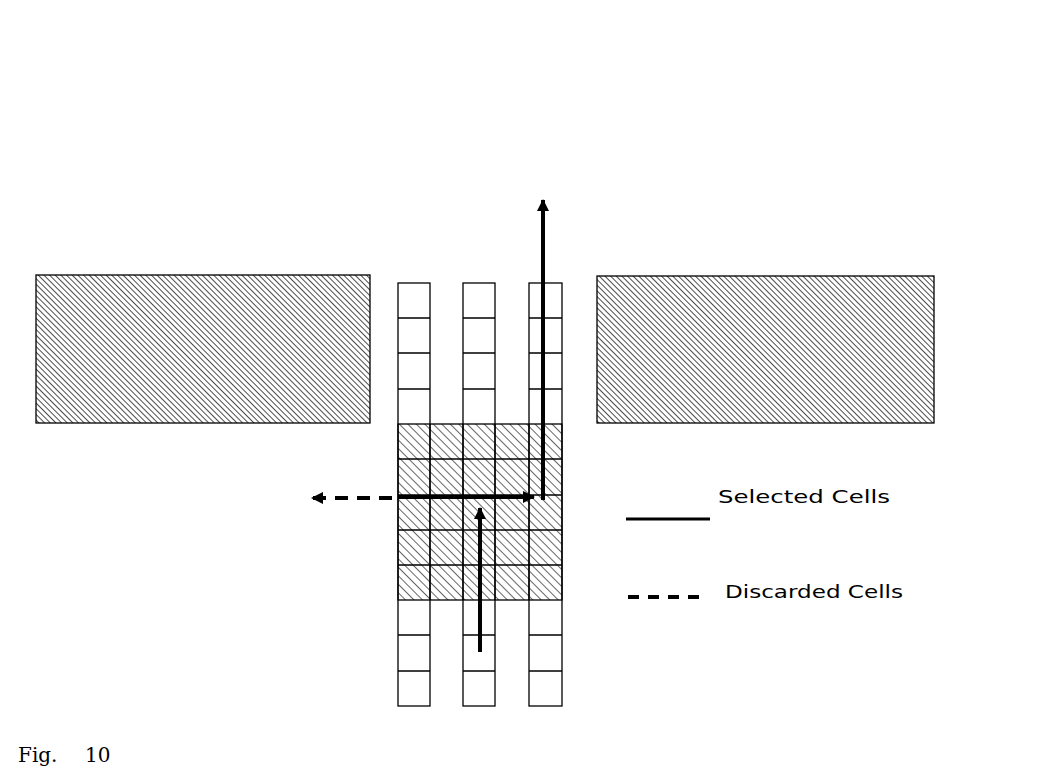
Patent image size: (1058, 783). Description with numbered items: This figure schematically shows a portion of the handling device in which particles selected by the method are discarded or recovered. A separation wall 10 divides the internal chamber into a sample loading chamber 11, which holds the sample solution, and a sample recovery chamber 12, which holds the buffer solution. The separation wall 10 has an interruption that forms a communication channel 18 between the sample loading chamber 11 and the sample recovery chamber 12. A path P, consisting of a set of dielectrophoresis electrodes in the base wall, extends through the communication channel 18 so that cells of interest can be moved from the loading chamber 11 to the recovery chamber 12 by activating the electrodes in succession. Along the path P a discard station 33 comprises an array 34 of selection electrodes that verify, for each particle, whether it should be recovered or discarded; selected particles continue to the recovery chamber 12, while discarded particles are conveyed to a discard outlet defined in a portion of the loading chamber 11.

The separation wall 10 is at (201, 268).
The sample recovery chamber 12 is at (486, 120).
The communication channel 18 is at (441, 288).
The array of selection electrodes 34 is at (441, 540).
The discard station 33 is at (254, 522).
The sample loading chamber 11 is at (270, 629).
The path P is at (541, 245).